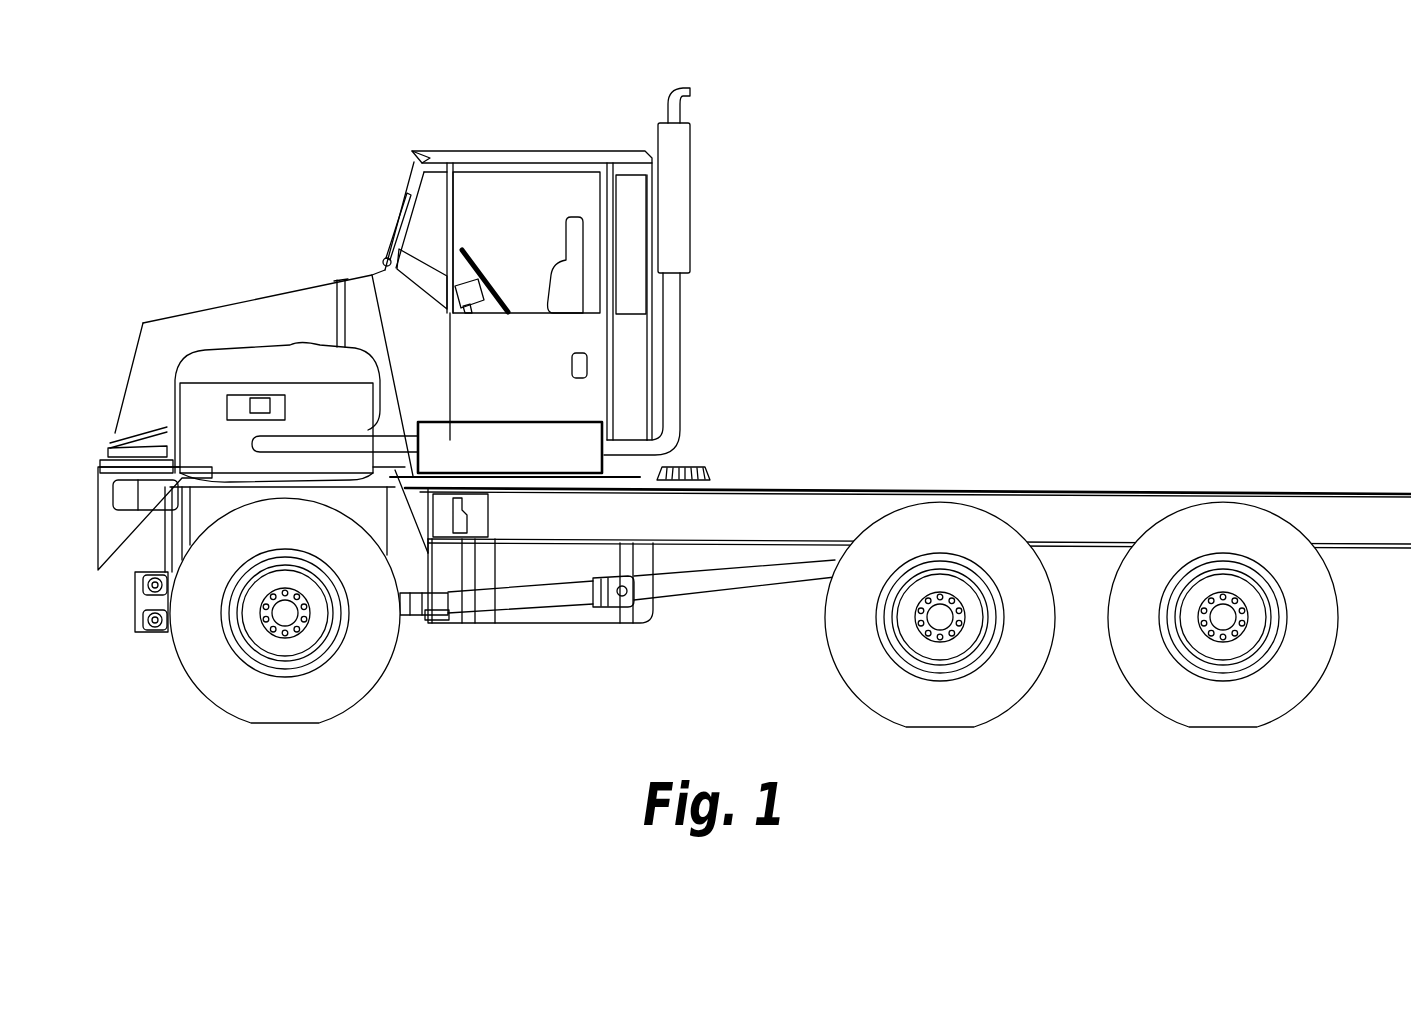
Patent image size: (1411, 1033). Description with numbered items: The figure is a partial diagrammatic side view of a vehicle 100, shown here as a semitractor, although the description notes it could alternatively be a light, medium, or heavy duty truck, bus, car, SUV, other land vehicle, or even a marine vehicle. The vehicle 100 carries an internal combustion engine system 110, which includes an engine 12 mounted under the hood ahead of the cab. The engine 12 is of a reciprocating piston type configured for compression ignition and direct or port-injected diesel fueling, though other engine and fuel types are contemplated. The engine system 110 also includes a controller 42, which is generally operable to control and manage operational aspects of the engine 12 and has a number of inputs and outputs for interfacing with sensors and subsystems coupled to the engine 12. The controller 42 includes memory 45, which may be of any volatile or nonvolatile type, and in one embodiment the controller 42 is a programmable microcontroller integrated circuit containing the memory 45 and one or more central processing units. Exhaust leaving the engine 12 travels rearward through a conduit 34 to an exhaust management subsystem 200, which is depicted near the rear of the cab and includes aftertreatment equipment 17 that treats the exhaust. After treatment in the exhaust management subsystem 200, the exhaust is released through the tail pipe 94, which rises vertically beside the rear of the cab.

The vehicle 100 is at (514, 74).
The internal combustion engine system 110 is at (1032, 150).
The tail pipe 94 is at (691, 90).
The engine 12 is at (305, 383).
The memory 45 is at (248, 398).
The controller 42 is at (227, 410).
The conduit 34 is at (350, 437).
The aftertreatment equipment 17 is at (523, 423).
The exhaust management subsystem 200 is at (584, 422).